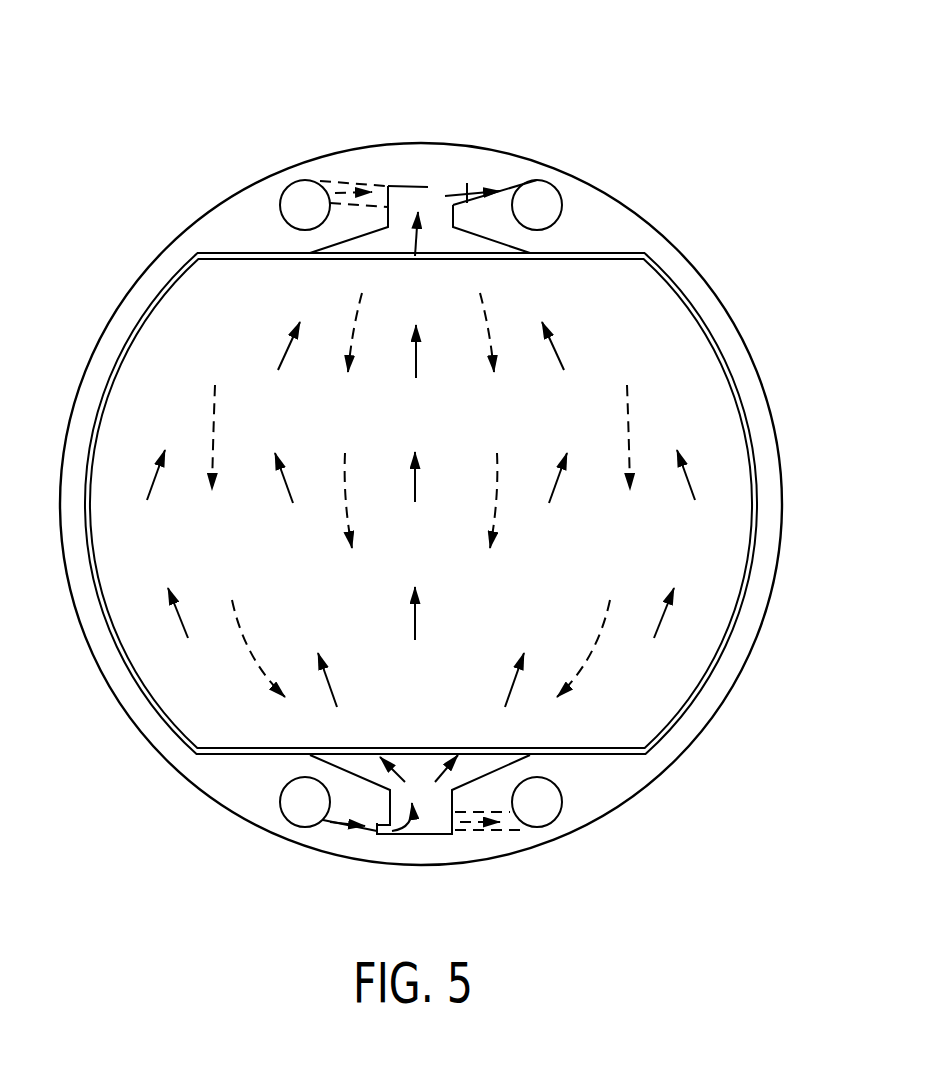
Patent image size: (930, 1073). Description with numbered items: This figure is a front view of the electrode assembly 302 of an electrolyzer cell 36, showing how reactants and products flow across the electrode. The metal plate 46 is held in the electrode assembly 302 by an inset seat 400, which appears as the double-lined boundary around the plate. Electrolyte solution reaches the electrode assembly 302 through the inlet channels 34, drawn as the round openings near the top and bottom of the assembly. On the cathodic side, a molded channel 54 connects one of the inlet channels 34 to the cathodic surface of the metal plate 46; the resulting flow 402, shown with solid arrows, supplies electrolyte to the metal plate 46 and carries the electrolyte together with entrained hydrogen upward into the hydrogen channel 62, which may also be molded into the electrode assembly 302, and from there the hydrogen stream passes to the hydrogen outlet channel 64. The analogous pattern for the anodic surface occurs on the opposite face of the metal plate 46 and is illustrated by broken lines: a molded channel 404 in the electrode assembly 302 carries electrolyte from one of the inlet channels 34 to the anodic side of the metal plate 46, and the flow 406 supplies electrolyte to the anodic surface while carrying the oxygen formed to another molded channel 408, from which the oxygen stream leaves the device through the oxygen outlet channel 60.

The electrolyzer cell 36 is at (125, 138).
The inlet channels 34 is at (285, 190).
The molded channel 404 is at (353, 182).
The hydrogen channel 62 is at (423, 195).
The hydrogen outlet channel 64 is at (553, 186).
The electrode assembly 302 is at (650, 223).
The metal plate 46 is at (175, 327).
The inset seat 400 is at (107, 382).
The flow 402 is at (420, 238).
The flow 406 is at (347, 480).
The molded channel 54 is at (419, 836).
The oxygen outlet channel 60 is at (562, 805).
The molded channel 408 is at (454, 836).